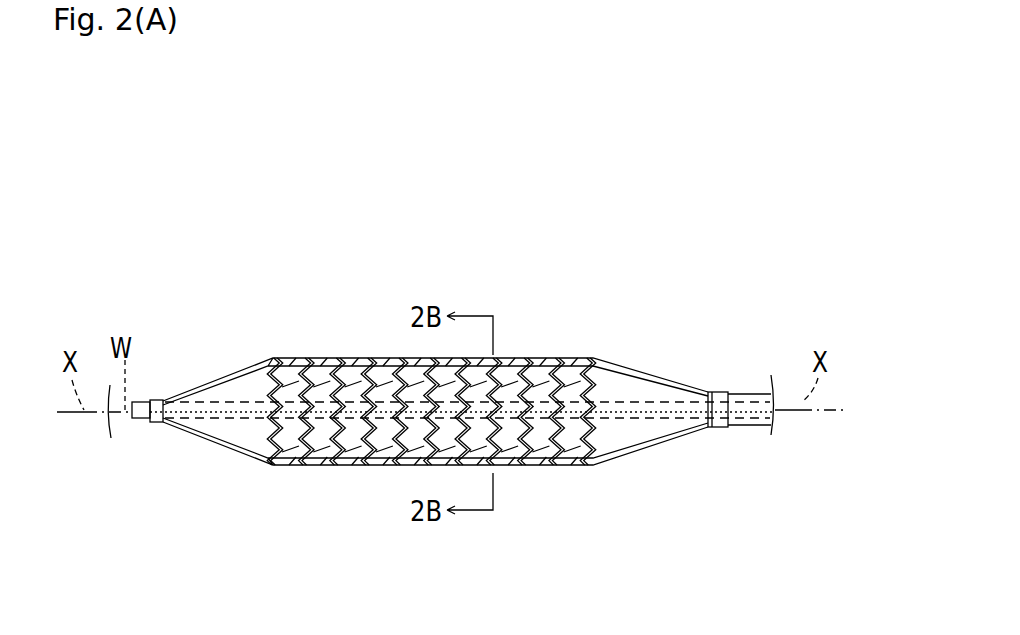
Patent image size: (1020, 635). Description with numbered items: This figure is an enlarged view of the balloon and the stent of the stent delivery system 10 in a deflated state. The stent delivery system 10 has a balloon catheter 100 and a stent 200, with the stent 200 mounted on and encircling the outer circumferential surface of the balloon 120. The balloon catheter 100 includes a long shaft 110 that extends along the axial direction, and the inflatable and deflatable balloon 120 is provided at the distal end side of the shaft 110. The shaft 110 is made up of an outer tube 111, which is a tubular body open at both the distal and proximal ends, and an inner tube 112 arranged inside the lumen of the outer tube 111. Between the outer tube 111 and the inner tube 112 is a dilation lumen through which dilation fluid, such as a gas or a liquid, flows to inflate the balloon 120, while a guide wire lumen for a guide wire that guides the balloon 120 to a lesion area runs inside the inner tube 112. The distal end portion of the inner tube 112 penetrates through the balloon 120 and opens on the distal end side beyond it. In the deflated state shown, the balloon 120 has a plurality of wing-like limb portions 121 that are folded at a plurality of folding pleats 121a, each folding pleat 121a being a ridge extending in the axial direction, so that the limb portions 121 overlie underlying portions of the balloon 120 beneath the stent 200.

The stent delivery system 10 is at (100, 112).
The balloon catheter 100 is at (542, 226).
The shaft 110 is at (688, 475).
The outer tube 111 is at (748, 426).
The inner tube 112 is at (688, 424).
The balloon 120 is at (660, 370).
The limb portion 121 is at (578, 457).
The folding pleat 121a is at (530, 450).
The stent 200 is at (352, 358).